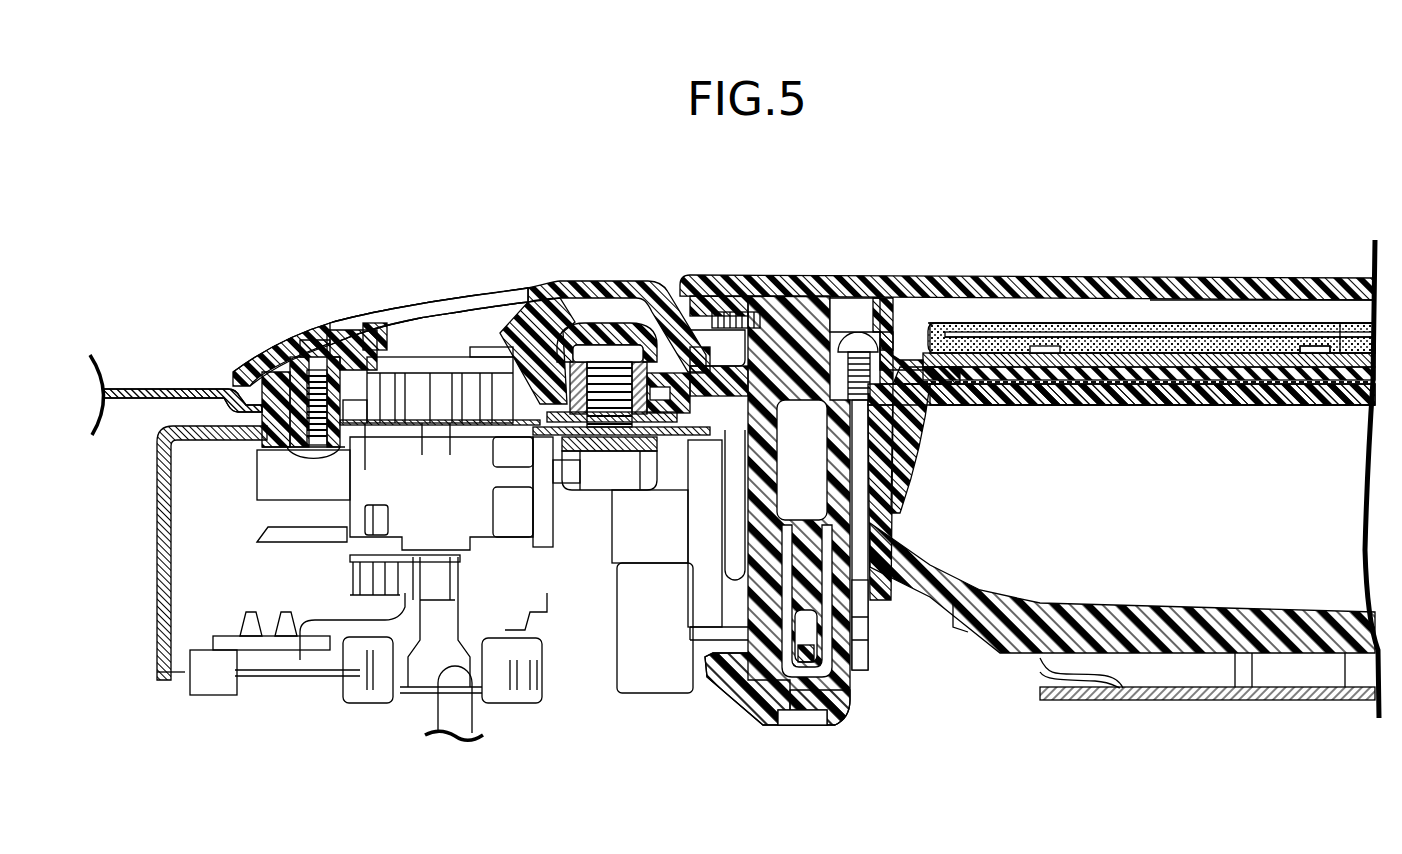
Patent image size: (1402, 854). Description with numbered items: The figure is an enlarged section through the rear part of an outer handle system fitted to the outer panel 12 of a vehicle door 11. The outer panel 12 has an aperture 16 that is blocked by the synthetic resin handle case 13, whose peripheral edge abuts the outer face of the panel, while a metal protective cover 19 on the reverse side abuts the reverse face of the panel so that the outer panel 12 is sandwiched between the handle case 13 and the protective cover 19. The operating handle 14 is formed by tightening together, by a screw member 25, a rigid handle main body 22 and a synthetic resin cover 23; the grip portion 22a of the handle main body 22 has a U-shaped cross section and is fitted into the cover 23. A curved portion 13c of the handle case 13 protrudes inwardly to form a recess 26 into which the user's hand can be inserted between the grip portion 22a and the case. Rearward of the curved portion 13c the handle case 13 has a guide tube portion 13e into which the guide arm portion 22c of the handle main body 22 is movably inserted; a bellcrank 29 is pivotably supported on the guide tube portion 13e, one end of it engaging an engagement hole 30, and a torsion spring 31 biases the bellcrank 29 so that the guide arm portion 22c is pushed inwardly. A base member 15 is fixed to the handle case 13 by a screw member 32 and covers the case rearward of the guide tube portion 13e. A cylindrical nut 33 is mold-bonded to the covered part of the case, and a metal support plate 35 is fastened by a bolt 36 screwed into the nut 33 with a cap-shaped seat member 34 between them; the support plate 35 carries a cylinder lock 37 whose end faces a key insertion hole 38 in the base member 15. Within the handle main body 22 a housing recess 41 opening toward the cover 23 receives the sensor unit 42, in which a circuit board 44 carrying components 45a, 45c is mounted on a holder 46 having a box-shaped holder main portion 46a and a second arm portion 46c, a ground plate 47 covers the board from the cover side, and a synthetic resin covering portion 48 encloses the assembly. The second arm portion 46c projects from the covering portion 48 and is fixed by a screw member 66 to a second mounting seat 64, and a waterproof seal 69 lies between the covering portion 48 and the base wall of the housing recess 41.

The vehicle door 11 is at (186, 380).
The outer panel 12 is at (145, 388).
The handle case 13 is at (1004, 648).
The curved portion 13c is at (1238, 700).
The guide tube portion 13e is at (868, 656).
The operating handle 14 is at (1061, 266).
The base member 15 is at (628, 282).
The aperture 16 is at (274, 362).
The protective cover 19 is at (1331, 702).
The handle main body 22 is at (1248, 418).
The grip portion 22a is at (1148, 407).
The guide arm portion 22c is at (838, 712).
The cover 23 is at (1198, 300).
The screw member 25 is at (760, 300).
The recess 26 is at (1287, 590).
The bellcrank 29 is at (805, 600).
The engagement hole 30 is at (757, 682).
The torsion spring 31 is at (718, 580).
The screw member 32 is at (318, 458).
The cylindrical nut 33 is at (548, 326).
The cap-shaped seat member 34 is at (503, 427).
The support plate 35 is at (672, 445).
The bolt 36 is at (600, 470).
The cylinder lock 37 is at (332, 578).
The key insertion hole 38 is at (478, 320).
The housing recess 41 is at (993, 323).
The sensor unit 42 is at (1160, 323).
The circuit board 44 is at (1262, 356).
The component 45a is at (1018, 322).
The component 45c is at (1350, 330).
The holder 46 is at (821, 334).
The holder main portion 46a is at (1040, 406).
The second arm portion 46c is at (900, 348).
The ground plate 47 is at (1118, 334).
The covering portion 48 is at (1316, 354).
The second mounting seat 64 is at (913, 350).
The screw member 66 is at (853, 330).
The waterproof seal 69 is at (1092, 407).